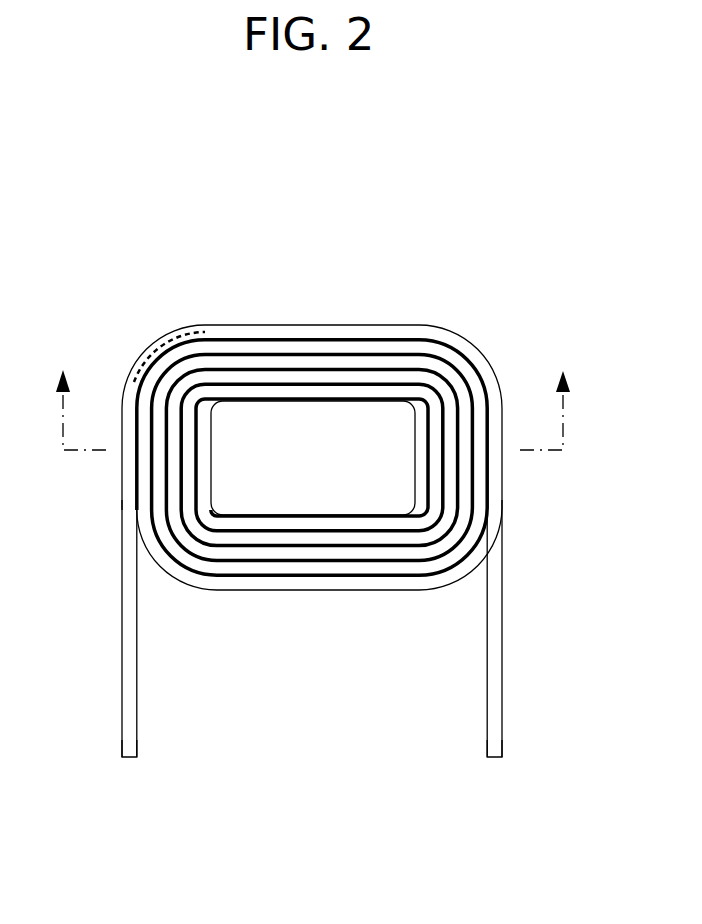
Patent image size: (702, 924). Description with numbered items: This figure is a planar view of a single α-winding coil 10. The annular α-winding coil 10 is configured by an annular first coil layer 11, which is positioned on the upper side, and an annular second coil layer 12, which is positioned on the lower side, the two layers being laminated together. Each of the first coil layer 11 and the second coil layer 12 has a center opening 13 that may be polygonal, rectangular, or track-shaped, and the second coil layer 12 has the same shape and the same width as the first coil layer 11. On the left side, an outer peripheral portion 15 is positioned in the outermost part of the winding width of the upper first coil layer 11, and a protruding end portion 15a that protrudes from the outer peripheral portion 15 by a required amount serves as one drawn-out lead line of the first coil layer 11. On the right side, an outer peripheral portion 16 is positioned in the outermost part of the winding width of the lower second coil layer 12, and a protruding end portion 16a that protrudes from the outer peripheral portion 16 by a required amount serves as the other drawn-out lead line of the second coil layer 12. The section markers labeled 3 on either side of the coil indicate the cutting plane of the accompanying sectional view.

The α-winding coil 10 is at (405, 213).
The first coil layer 11 is at (349, 322).
The second coil layer 12 is at (468, 338).
The center opening 13 is at (293, 469).
The outer peripheral portion 15 is at (122, 481).
The protruding end portion 15a is at (122, 718).
The outer peripheral portion 16 is at (502, 487).
The protruding end portion 16a is at (502, 712).
The section line of FIG. 3 is at (316, 391).